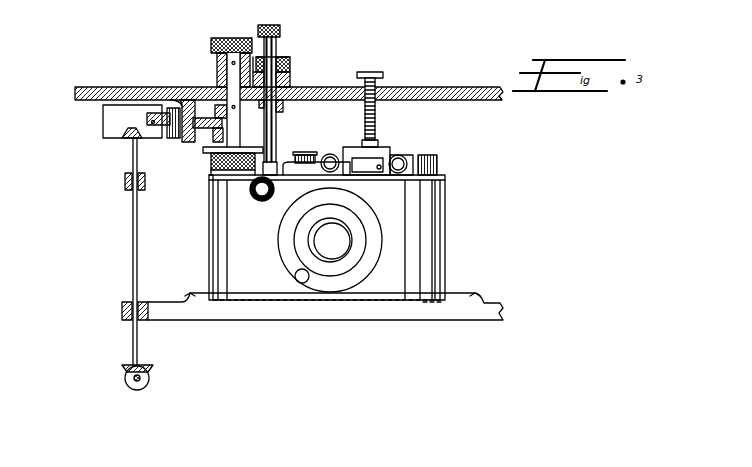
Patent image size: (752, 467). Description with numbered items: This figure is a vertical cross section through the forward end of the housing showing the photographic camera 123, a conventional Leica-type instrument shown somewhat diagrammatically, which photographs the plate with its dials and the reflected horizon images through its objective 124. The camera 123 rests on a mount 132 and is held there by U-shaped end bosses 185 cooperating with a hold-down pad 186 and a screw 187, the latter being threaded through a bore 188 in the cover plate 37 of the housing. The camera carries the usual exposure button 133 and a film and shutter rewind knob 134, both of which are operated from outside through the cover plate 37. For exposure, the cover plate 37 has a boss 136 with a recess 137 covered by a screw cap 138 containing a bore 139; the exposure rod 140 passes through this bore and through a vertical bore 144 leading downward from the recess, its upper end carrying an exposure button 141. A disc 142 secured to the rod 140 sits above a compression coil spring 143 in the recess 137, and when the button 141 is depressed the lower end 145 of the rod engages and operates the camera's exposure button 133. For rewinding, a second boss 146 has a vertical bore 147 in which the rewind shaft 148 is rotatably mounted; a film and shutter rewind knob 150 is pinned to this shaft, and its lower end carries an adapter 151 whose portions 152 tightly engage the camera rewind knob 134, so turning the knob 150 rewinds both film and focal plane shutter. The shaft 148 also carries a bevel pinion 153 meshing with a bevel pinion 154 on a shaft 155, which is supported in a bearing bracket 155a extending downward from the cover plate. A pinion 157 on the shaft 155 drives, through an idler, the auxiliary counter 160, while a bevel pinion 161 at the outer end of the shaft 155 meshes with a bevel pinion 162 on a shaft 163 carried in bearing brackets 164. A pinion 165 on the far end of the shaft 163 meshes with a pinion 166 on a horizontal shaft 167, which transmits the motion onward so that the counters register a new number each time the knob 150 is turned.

The cover plate 37 is at (385, 92).
The photographic camera 123 is at (446, 188).
The objective 124 is at (330, 240).
The mount 132 is at (243, 320).
The exposure button 133 is at (266, 182).
The film and shutter rewind knob 134 is at (211, 178).
The boss 136 is at (291, 84).
The recess 137 is at (291, 70).
The screw cap 138 is at (291, 62).
The bore 139 is at (290, 57).
The exposure rod 140 is at (277, 46).
The exposure button 141 is at (281, 31).
The disc 142 is at (257, 58).
The compression coil spring 143 is at (281, 100).
The vertical bore 144 is at (263, 100).
The lower end 145 is at (279, 157).
The second boss 146 is at (272, 104).
The vertical bore 147 is at (233, 80).
The rewind shaft 148 is at (222, 60).
The film and shutter rewind knob 150 is at (212, 44).
The adapter 151 is at (240, 148).
The portions 152 is at (210, 167).
The bevel pinion 153 is at (243, 108).
The bevel pinion 154 is at (217, 114).
The shaft 155 is at (188, 138).
The bearing bracket 155a is at (205, 130).
The pinion 157 is at (172, 130).
The auxiliary counter 160 is at (103, 115).
The bevel pinion 161 is at (157, 115).
The bevel pinion 162 is at (122, 135).
The shaft 163 is at (133, 156).
The bearing brackets 164 is at (125, 180).
The pinion 165 is at (122, 368).
The pinion 166 is at (126, 384).
The horizontal shaft 167 is at (141, 378).
The U-shaped end bosses 185 is at (190, 296).
The hold-down pad 186 is at (382, 150).
The screw 187 is at (373, 72).
The bore 188 is at (377, 94).